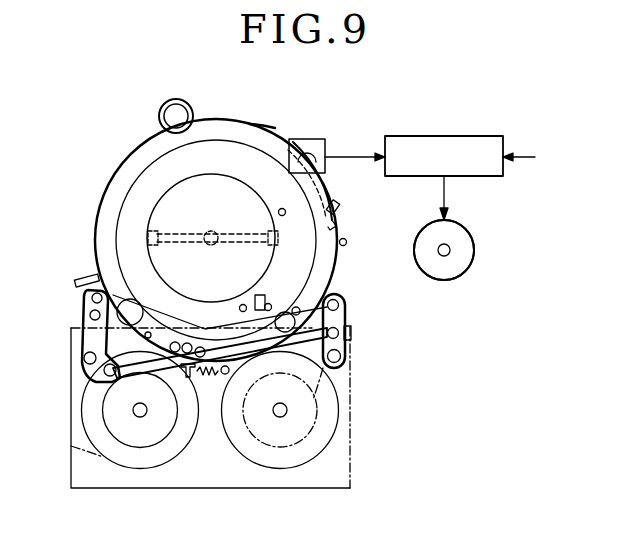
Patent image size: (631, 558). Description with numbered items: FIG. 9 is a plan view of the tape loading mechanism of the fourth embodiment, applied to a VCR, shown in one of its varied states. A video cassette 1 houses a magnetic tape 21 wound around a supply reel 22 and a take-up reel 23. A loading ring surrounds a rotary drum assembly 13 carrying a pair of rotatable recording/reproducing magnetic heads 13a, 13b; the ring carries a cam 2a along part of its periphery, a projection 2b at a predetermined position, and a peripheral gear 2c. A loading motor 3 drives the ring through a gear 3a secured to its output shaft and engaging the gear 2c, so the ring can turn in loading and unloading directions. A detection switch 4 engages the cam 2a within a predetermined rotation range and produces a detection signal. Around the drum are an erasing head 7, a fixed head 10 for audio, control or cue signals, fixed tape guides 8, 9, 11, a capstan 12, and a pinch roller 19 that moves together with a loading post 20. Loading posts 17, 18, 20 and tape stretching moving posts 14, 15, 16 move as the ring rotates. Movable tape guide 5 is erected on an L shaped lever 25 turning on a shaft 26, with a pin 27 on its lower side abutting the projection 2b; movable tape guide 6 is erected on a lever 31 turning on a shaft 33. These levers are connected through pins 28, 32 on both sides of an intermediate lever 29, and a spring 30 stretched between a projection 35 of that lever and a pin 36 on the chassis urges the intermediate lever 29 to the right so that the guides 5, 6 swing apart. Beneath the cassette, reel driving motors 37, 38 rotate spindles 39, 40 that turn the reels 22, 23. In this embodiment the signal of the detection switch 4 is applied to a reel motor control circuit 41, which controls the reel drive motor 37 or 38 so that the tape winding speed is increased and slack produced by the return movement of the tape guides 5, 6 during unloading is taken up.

The video cassette 1 is at (352, 488).
The cam 2a is at (326, 195).
The projection 2b is at (88, 277).
The gear 2c is at (263, 122).
The loading motor 3 is at (160, 106).
The gear 3a is at (186, 107).
The detection switch 4 is at (310, 139).
The movable tape guide 5 is at (92, 292).
The movable tape guide 6 is at (344, 303).
The erasing head 7 is at (346, 207).
The tape guide 8 is at (280, 210).
The tape guide 9 is at (257, 294).
The fixed head 10 is at (280, 312).
The tape guide 11 is at (295, 306).
The capstan 12 is at (346, 242).
The rotary drum assembly 13 is at (172, 195).
The recording/reproducing magnetic head 13a is at (150, 222).
The recording/reproducing magnetic head 13b is at (272, 233).
The tape stretching moving post 14 is at (200, 346).
The tape stretching moving post 15 is at (152, 333).
The tape stretching moving post 16 is at (187, 342).
The loading post 17 is at (115, 343).
The loading post 18 is at (130, 298).
The pinch roller 19 is at (318, 382).
The loading post 20 is at (318, 292).
The magnetic tape 21 is at (175, 341).
The supply reel 22 is at (82, 440).
The take-up reel 23 is at (312, 455).
The L shaped lever 25 is at (83, 322).
The shaft 26 is at (96, 366).
The pin 27 is at (84, 314).
The pin 28 is at (103, 368).
The intermediate lever 29 is at (130, 373).
The spring 30 is at (205, 378).
The lever 31 is at (346, 320).
The pin 32 is at (346, 333).
The shaft 33 is at (347, 362).
The projection 35 is at (188, 378).
The pin 36 is at (225, 376).
The reel driving motor 37 is at (464, 281).
The reel driving motor 38 is at (444, 250).
The reel drive spindle 39 is at (141, 418).
The reel drive spindle 40 is at (280, 418).
The reel motor control circuit 41 is at (478, 135).